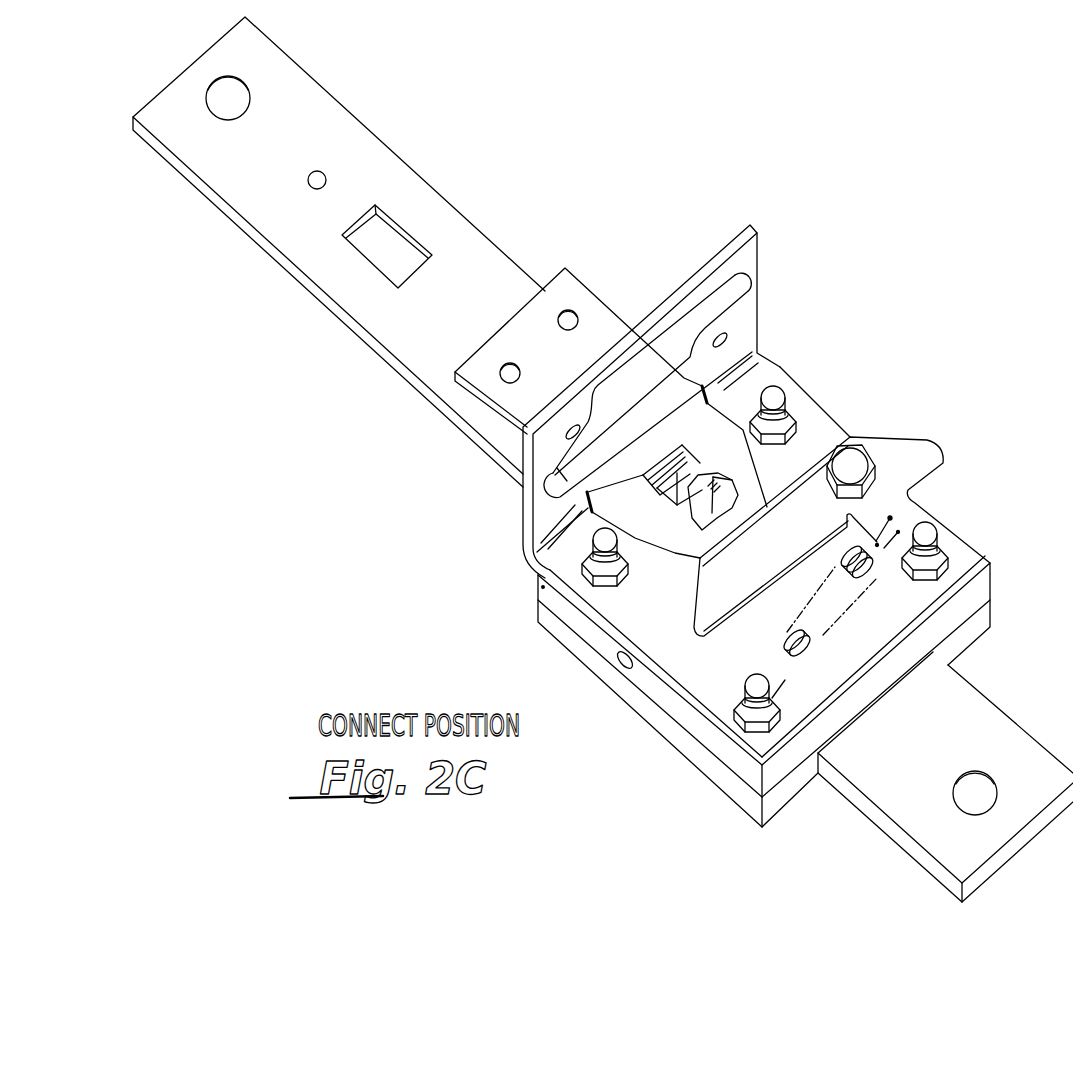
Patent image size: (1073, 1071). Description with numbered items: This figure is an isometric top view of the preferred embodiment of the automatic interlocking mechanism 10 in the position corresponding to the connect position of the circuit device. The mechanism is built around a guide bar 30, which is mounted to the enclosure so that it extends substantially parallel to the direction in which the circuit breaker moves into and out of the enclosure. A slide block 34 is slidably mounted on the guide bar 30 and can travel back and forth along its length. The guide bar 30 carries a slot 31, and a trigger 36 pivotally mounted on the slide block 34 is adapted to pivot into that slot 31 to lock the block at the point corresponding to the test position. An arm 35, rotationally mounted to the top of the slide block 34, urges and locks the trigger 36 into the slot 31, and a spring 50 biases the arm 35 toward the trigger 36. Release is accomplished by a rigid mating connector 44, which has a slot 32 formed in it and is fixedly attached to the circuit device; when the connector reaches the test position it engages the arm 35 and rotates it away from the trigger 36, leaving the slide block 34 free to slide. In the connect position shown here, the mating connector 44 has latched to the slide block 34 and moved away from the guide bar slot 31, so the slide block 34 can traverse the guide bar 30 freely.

The automatic interlocking mechanism 10 is at (858, 215).
The guide bar 30 is at (365, 153).
The slot 31 is at (397, 257).
The slot 32 is at (528, 552).
The slide block 34 is at (967, 562).
The arm 35 is at (915, 457).
The trigger 36 is at (765, 500).
The mating connector 44 is at (603, 318).
The spring 50 is at (787, 632).